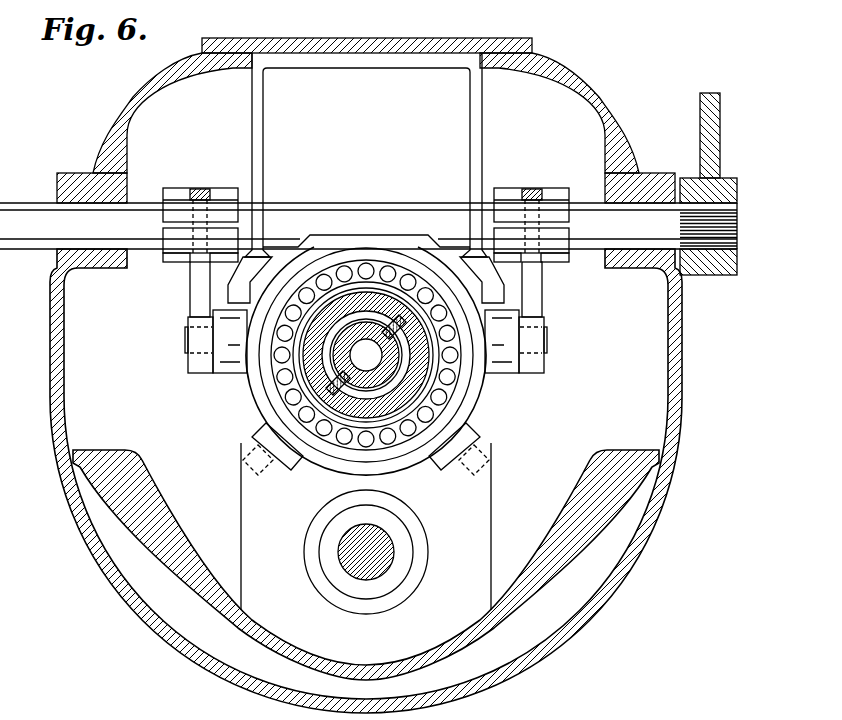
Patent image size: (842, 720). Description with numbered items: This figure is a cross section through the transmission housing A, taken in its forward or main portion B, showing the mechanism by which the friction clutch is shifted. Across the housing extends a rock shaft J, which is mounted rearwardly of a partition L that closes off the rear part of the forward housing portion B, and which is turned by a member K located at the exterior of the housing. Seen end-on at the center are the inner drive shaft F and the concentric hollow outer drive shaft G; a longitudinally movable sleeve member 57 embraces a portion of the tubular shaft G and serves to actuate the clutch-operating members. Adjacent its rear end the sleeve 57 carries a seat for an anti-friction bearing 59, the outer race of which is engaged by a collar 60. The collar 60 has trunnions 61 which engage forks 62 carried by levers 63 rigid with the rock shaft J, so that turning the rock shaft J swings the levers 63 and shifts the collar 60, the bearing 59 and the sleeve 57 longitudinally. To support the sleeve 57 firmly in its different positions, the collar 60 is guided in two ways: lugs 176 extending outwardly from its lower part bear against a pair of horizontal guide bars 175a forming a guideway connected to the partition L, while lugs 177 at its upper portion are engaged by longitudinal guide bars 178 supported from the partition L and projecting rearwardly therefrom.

The housing A is at (135, 93).
The forward or main portion B is at (110, 147).
The member K is at (700, 113).
The partition L is at (95, 298).
The rock shaft J is at (407, 213).
The concentric hollow outer drive shaft G is at (405, 343).
The inner drive shaft F is at (392, 355).
The sleeve member 57 is at (305, 392).
The anti-friction bearing 59 is at (347, 267).
The collar 60 is at (320, 250).
The trunnions 61 is at (188, 338).
The forks 62 is at (193, 363).
The levers 63 is at (202, 281).
The lugs 176 is at (255, 431).
The horizontal guide bars 175a is at (248, 463).
The lugs 177 is at (265, 268).
The longitudinal guide bars 178 is at (247, 263).